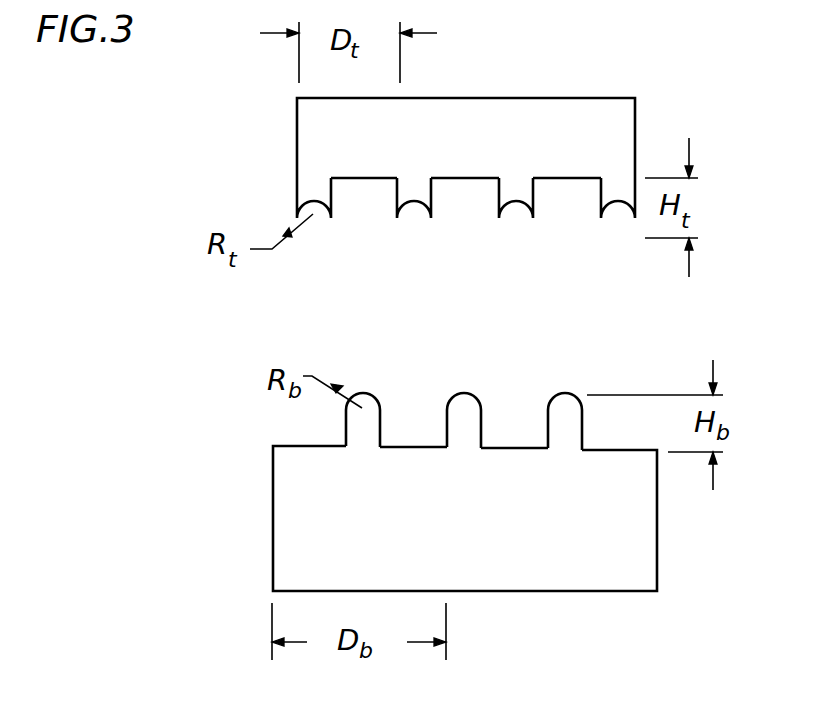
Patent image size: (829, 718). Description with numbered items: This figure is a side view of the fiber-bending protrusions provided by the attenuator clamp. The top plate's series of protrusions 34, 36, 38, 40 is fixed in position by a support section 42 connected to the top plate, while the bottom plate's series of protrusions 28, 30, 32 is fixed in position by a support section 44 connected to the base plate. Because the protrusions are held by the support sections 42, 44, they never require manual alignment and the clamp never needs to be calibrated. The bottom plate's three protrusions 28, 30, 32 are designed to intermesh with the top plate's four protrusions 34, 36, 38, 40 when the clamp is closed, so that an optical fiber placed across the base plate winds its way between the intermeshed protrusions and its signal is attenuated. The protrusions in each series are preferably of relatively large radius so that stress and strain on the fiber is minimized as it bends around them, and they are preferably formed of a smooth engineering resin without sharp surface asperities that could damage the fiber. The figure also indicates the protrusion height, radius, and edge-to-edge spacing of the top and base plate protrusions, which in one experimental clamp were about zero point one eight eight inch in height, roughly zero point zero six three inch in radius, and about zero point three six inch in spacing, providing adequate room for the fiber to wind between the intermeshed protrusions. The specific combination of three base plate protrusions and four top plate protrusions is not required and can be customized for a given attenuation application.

The base plate protrusion 28 is at (366, 428).
The base plate protrusion 30 is at (468, 428).
The base plate protrusion 32 is at (563, 427).
The top plate protrusion 34 is at (313, 196).
The top plate protrusion 36 is at (414, 197).
The top plate protrusion 38 is at (522, 198).
The top plate protrusion 40 is at (615, 198).
The support section 42 is at (482, 145).
The support section 44 is at (488, 534).